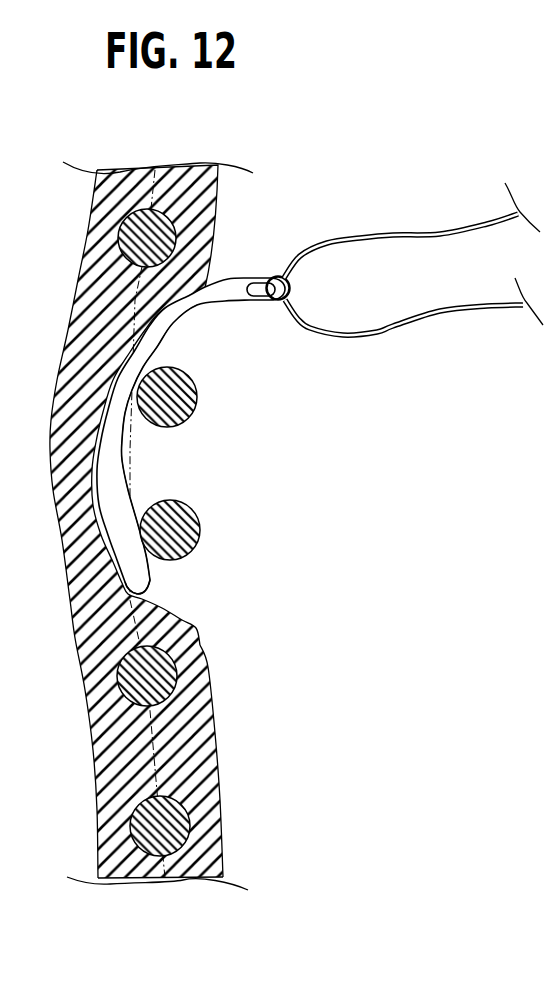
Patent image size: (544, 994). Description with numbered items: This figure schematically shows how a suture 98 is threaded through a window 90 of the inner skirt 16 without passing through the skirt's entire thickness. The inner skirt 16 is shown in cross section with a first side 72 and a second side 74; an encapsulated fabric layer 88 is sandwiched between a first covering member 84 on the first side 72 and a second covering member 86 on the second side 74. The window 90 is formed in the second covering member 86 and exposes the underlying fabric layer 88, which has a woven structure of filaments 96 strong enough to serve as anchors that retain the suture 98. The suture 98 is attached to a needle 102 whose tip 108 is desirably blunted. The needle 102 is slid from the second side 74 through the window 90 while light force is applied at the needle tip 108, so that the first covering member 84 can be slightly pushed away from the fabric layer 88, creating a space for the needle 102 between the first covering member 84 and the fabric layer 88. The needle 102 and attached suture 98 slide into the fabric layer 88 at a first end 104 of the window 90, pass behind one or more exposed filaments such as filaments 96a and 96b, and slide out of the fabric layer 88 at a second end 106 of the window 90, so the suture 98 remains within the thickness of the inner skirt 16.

The inner skirt 16 is at (99, 142).
The first side 72 is at (88, 233).
The second side 74 is at (218, 200).
The first covering member 84 is at (106, 789).
The second covering member 86 is at (210, 823).
The fabric layer 88 is at (150, 855).
The window 90 is at (248, 454).
The woven filaments 96 is at (178, 230).
The filament 96a is at (188, 392).
The filament 96b is at (190, 515).
The suture 98 is at (405, 236).
The needle 102 is at (222, 280).
The first end 104 is at (182, 352).
The second end 106 is at (184, 600).
The needle tip 108 is at (151, 582).